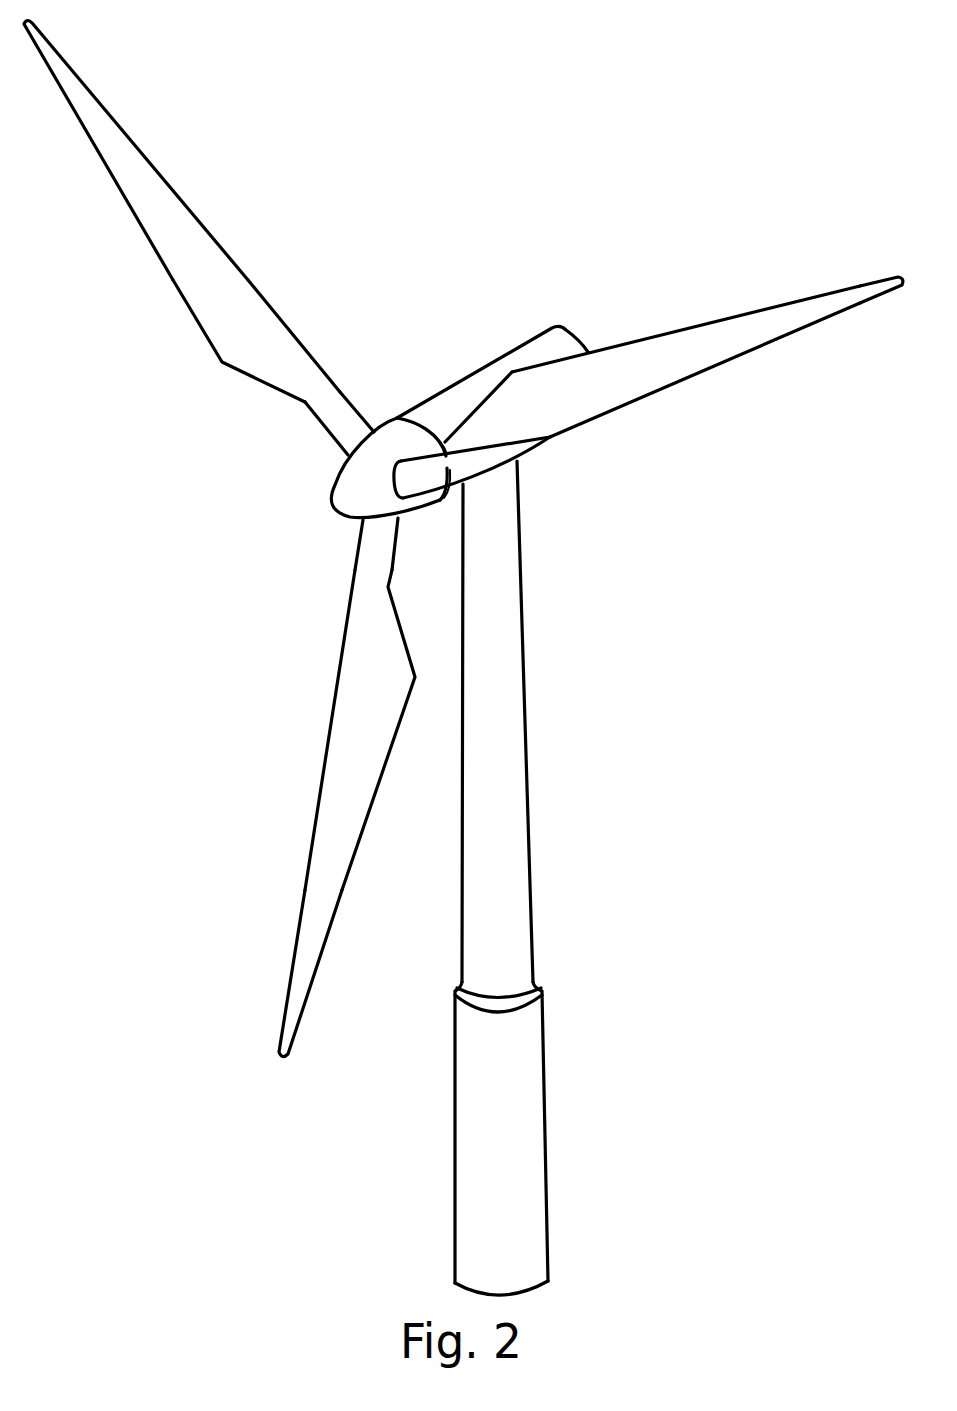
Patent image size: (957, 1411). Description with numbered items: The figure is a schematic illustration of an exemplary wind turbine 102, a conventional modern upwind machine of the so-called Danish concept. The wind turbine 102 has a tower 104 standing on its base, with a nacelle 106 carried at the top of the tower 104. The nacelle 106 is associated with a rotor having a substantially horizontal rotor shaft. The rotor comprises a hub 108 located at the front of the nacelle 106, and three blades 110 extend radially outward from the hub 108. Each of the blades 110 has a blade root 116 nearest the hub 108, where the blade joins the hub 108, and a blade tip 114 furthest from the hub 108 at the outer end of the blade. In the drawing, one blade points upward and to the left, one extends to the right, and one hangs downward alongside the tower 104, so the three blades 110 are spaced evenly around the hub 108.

The wind turbine 102 is at (463, 658).
The tower 104 is at (503, 824).
The nacelle 106 is at (450, 402).
The hub 108 is at (347, 507).
The blades 110 is at (225, 328).
The blade tip 114 is at (128, 160).
The blade root 116 is at (350, 440).